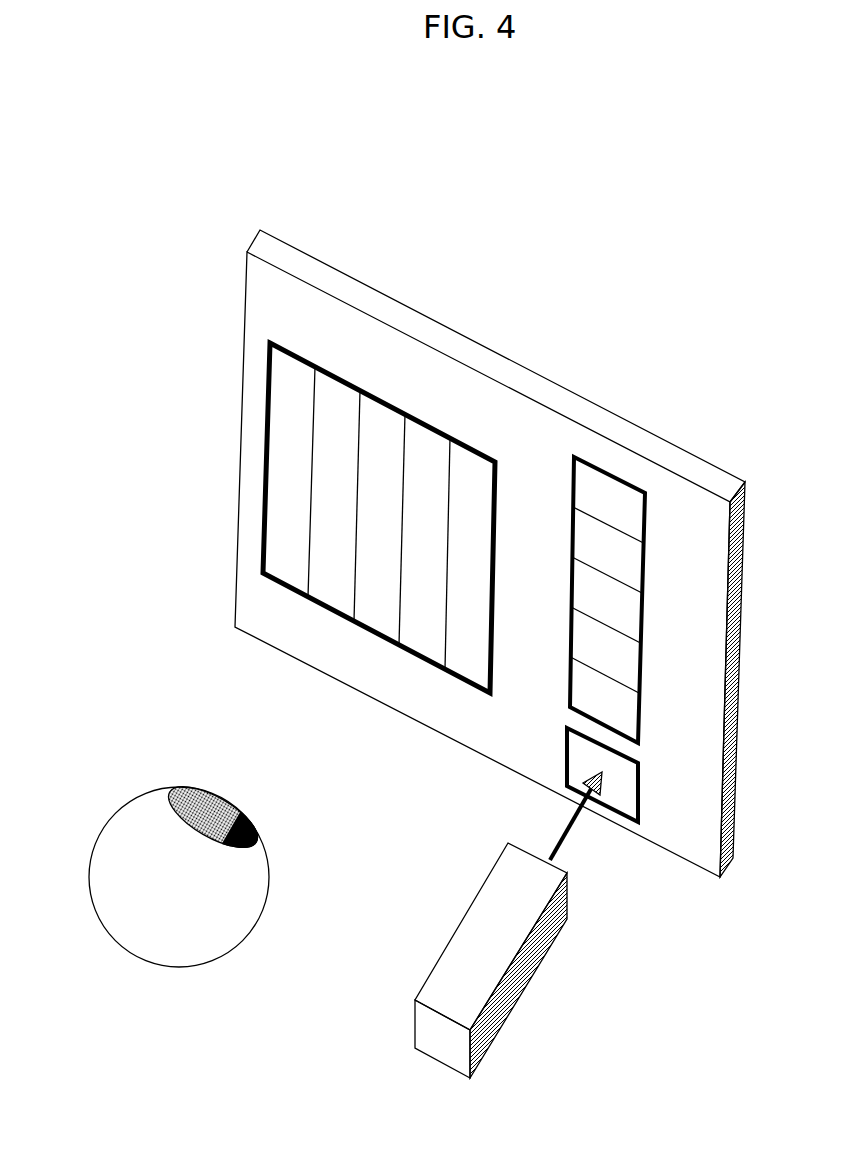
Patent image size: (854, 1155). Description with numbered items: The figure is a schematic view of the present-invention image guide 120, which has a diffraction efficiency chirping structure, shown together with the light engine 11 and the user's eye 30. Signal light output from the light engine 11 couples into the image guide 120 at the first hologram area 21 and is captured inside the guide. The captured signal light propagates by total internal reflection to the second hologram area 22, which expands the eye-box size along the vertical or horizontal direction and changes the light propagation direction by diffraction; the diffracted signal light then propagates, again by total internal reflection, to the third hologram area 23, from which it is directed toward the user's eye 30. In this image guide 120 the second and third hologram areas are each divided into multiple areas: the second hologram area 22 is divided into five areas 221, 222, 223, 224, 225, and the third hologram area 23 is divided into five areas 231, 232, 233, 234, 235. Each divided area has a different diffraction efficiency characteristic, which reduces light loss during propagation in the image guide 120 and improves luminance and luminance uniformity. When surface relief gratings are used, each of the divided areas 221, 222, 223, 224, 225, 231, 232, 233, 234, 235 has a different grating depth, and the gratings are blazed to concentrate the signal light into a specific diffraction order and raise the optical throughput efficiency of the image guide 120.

The image guide 120 is at (342, 288).
The third hologram area 23 is at (498, 528).
The divided area of third hologram area 231 is at (470, 477).
The divided area of third hologram area 232 is at (423, 453).
The divided area of third hologram area 233 is at (383, 420).
The divided area of third hologram area 234 is at (328, 402).
The divided area of third hologram area 235 is at (280, 375).
The second hologram area 22 is at (572, 573).
The divided area of second hologram area 221 is at (628, 723).
The divided area of second hologram area 222 is at (632, 670).
The divided area of second hologram area 223 is at (635, 620).
The divided area of second hologram area 224 is at (633, 577).
The divided area of second hologram area 225 is at (625, 528).
The first hologram area 21 is at (628, 788).
The user's eye 30 is at (120, 948).
The light engine 11 is at (423, 1055).